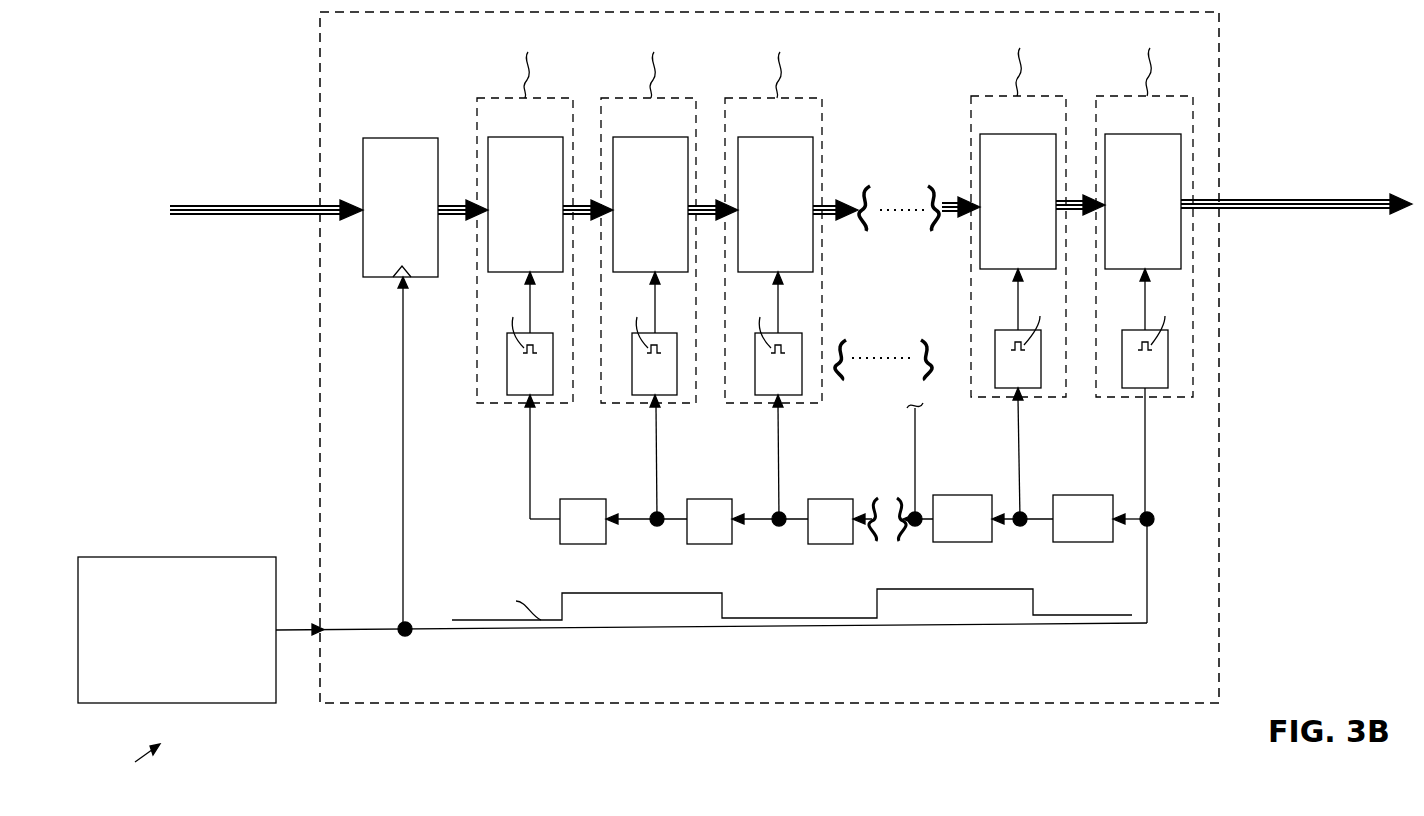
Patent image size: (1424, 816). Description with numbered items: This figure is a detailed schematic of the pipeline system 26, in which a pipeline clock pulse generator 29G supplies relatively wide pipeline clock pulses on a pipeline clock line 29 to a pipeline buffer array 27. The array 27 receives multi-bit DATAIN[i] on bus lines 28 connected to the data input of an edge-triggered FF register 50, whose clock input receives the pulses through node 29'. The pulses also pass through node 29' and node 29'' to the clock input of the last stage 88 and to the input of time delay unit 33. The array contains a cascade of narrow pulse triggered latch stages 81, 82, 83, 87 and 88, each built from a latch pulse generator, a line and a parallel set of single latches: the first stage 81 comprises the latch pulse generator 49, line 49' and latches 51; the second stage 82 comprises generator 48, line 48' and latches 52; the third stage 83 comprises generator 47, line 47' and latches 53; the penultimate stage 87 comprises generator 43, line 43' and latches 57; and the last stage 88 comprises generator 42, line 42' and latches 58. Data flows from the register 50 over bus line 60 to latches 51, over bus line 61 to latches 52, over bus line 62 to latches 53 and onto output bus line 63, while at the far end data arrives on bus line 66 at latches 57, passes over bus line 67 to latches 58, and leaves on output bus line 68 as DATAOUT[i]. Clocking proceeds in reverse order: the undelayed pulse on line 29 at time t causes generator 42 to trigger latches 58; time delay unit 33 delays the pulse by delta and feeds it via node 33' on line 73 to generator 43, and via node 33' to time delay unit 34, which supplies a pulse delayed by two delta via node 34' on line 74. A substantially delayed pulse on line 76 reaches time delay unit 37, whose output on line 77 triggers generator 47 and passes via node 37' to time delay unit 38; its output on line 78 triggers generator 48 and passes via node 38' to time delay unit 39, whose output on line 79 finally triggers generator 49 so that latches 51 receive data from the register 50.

The system 26 is at (130, 762).
The pipeline buffer array 27 is at (345, 708).
The DATAIN bus lines 28 is at (276, 216).
The pipeline clock line 29 is at (711, 489).
The pipeline clock pulse generator 29G is at (176, 557).
The node 29' is at (385, 612).
The node 29'' is at (1174, 500).
The D(N-1) time delay unit 33 is at (1108, 487).
The node 33' is at (1022, 537).
The D(N-2) time delay unit 34 is at (962, 541).
The node 34' is at (893, 530).
The D3 time delay unit 37 is at (830, 543).
The node 37' is at (770, 537).
The D2 time delay unit 38 is at (709, 543).
The node 38' is at (646, 537).
The D1 time delay unit 39 is at (583, 544).
The latch pulse generator 42 is at (1148, 338).
The line 42' is at (1128, 299).
The latch pulse generator 43 is at (1022, 338).
The line 43' is at (1001, 299).
The latch pulse generator 47 is at (773, 342).
The line 47' is at (796, 302).
The latch pulse generator 48 is at (649, 342).
The line 48' is at (673, 302).
The latch pulse generator 49 is at (525, 342).
The line 49' is at (548, 302).
The FF register 50 is at (398, 138).
The L1 parallel set of single latches 51 is at (529, 140).
The L2 parallel set of single latches 52 is at (653, 140).
The L3 parallel set of single latches 53 is at (777, 140).
The L(N-1) parallel set of single latches 57 is at (1022, 137).
The LN parallel set of single latches 58 is at (1147, 137).
The bus line 60 is at (451, 205).
The bus line 61 is at (578, 205).
The bus line 62 is at (702, 205).
The output bus line 63 is at (827, 205).
The bus line 66 is at (945, 203).
The bus line 67 is at (1071, 201).
The output bus line 68 is at (1250, 209).
The line 73 is at (1010, 512).
The line 74 is at (908, 512).
The line 76 is at (878, 505).
The line 77 is at (762, 512).
The line 78 is at (640, 512).
The line 79 is at (532, 470).
The NPTL1 stage 81 is at (478, 98).
The NPTL2 stage 82 is at (603, 98).
The NPTL3 stage 83 is at (728, 98).
The NPTL(N-1) stage 87 is at (970, 96).
The NPTL(N) stage 88 is at (1104, 85).